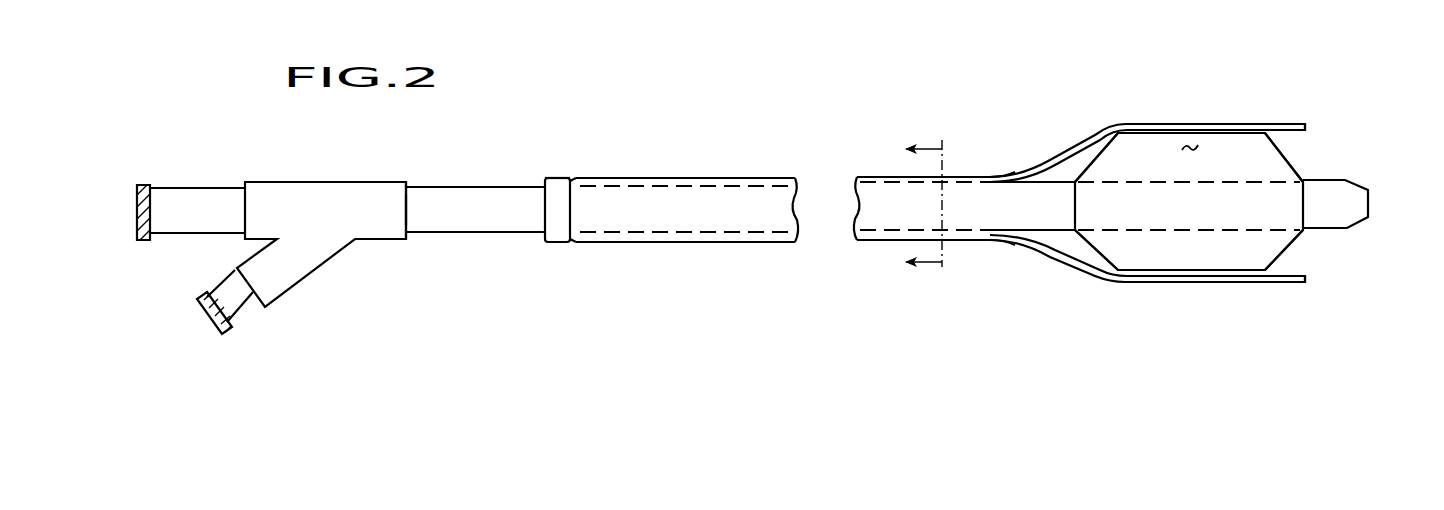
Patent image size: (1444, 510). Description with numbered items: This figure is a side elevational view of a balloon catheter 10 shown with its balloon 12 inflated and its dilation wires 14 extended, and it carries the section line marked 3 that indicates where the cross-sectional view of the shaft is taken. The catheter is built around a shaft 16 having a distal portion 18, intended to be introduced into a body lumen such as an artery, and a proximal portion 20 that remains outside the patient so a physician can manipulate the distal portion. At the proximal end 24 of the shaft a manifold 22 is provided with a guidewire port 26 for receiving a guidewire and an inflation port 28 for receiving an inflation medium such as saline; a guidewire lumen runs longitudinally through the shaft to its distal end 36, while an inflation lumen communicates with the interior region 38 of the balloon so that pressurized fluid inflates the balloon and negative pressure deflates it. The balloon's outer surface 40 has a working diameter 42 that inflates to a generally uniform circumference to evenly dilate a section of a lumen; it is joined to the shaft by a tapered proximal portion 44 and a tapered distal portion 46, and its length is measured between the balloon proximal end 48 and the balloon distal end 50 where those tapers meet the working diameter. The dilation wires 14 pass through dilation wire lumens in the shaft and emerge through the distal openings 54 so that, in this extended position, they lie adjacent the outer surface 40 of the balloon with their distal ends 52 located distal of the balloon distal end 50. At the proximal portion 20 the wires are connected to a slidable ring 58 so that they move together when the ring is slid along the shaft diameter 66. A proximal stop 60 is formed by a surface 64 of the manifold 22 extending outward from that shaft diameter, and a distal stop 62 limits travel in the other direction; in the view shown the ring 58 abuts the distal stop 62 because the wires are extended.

The balloon catheter 10 is at (584, 92).
The balloon 12 is at (1294, 153).
The dilation wires 14 is at (1091, 139).
The shaft 16 is at (870, 176).
The distal portion 18 is at (967, 176).
The proximal portion 20 is at (705, 177).
The manifold 22 is at (292, 183).
The proximal end 24 is at (370, 182).
The guidewire port 26 is at (197, 184).
The inflation port 28 is at (251, 311).
The distal end 36 is at (1372, 190).
The interior region 38 is at (1196, 143).
The outer surface 40 is at (1244, 127).
The working diameter 42 is at (1163, 127).
The tapered proximal portion 44 is at (1101, 156).
The tapered distal portion 46 is at (1279, 153).
The balloon proximal end 48 is at (1121, 136).
The balloon distal end 50 is at (1262, 136).
The distal ends 52 is at (1309, 124).
The distal openings 54 is at (993, 177).
The ring 58 is at (558, 177).
The proximal stop 60 is at (408, 183).
The distal stop 62 is at (577, 180).
The surface 64 is at (411, 211).
The shaft diameter 66 is at (490, 186).
The section line 3- 3 is at (930, 205).